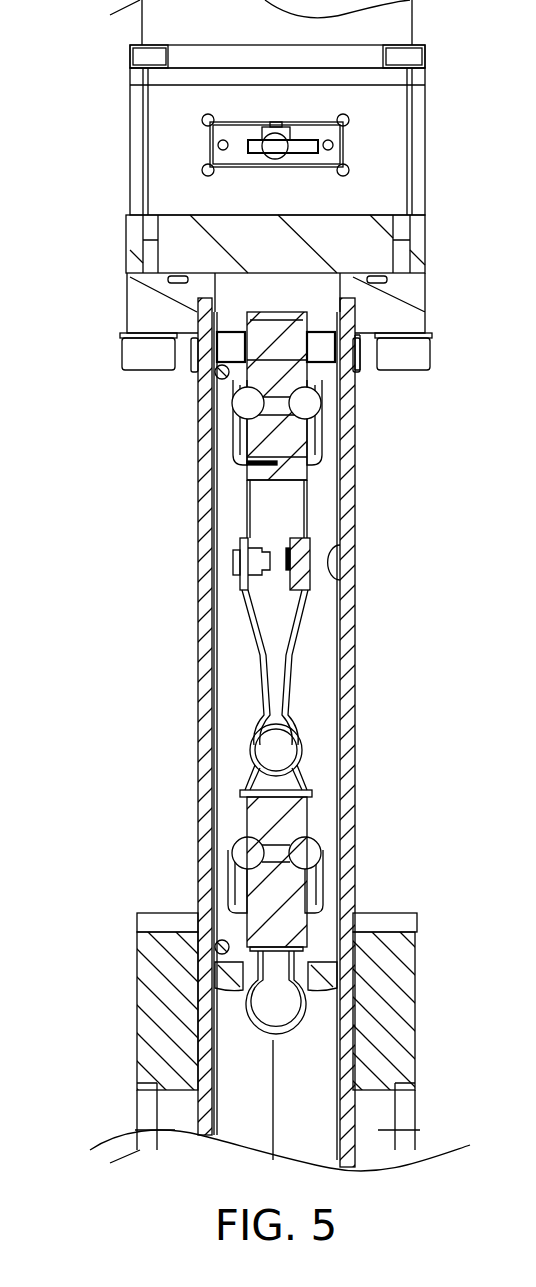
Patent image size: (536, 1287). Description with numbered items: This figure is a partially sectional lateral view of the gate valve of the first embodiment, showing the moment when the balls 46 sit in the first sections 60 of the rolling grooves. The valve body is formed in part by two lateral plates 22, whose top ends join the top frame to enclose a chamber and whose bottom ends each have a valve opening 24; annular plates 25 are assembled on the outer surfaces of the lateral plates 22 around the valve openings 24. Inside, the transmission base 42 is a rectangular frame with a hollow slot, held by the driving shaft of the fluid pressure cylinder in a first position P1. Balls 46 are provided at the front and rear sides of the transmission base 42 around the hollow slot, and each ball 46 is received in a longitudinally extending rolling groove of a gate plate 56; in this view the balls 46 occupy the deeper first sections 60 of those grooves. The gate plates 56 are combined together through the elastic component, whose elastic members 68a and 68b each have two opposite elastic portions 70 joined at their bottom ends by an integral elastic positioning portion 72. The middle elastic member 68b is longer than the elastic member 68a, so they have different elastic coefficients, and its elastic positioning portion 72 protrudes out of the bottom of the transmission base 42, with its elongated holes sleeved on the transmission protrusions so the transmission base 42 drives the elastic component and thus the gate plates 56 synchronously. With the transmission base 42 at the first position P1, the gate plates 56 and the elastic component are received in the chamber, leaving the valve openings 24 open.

The first position P1 is at (283, 353).
The transmission base 42 is at (273, 382).
The first section 60 is at (248, 410).
The ball 46 is at (232, 448).
The lateral plate 22 is at (205, 604).
The elastic portion 70 is at (255, 645).
The gate plate 56 is at (222, 742).
The elastic member 68a is at (246, 763).
The annular plate 25 is at (150, 985).
The elastic positioning portion 72 is at (303, 1010).
The elastic member 68b is at (245, 1028).
The valve opening 24 is at (150, 1135).